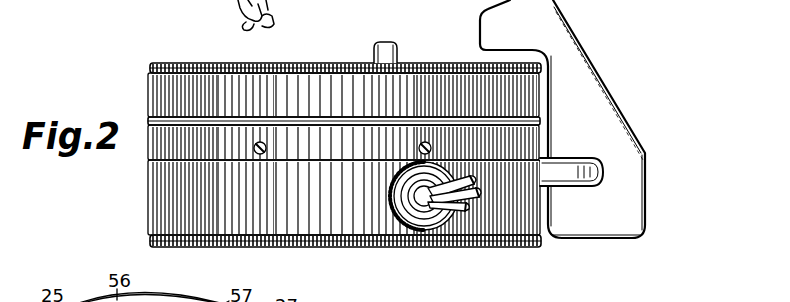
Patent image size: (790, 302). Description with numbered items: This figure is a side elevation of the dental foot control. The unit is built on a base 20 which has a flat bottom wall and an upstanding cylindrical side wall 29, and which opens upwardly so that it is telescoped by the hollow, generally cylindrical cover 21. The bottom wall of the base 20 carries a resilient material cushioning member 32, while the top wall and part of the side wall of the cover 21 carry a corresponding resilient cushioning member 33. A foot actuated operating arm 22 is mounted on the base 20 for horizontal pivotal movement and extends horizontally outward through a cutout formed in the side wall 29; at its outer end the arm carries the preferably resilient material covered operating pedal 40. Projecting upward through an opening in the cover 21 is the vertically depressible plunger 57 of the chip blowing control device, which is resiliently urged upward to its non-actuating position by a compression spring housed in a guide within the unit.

The base 20 is at (148, 205).
The cover 21 is at (147, 88).
The foot actuated operating arm 22 is at (598, 68).
The side wall 29 is at (540, 200).
The cushioning member 32 is at (324, 246).
The cushioning member 33 is at (200, 64).
The operating pedal 40 is at (610, 118).
The plunger 57 is at (386, 52).